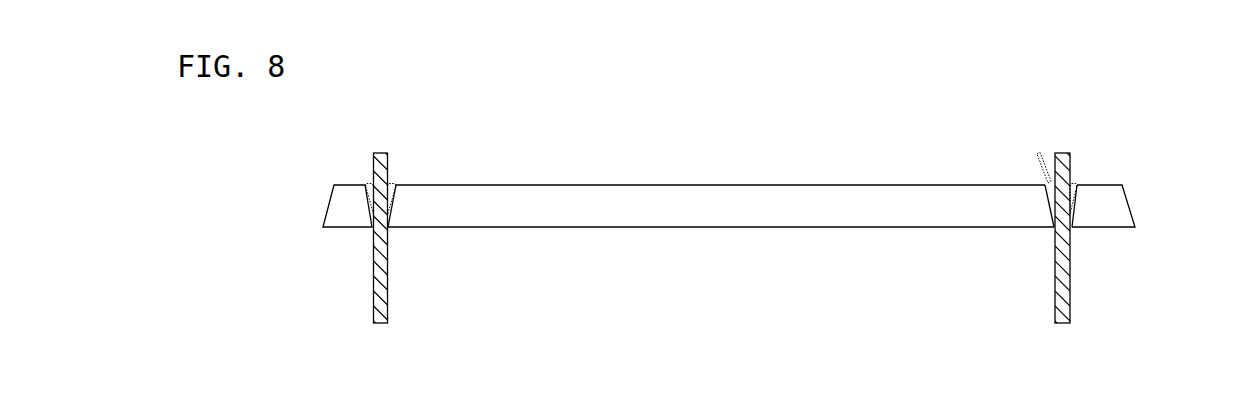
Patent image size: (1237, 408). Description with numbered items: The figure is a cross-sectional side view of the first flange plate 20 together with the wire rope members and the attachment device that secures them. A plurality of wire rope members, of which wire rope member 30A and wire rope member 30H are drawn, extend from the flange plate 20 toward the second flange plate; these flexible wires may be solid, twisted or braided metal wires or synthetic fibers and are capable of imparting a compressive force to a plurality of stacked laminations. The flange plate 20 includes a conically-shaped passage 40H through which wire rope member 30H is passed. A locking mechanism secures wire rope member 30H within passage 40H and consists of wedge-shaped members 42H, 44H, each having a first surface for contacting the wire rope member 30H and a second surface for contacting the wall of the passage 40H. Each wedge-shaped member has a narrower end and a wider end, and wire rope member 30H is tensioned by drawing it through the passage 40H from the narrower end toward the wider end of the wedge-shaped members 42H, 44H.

The first flange plate 20 is at (722, 214).
The wire rope member 30A is at (387, 170).
The wire rope member 30H is at (1067, 152).
The conically-shaped passage 40H is at (1032, 174).
The wedge-shaped member 42H is at (1038, 155).
The wedge-shaped member 44H is at (1073, 183).